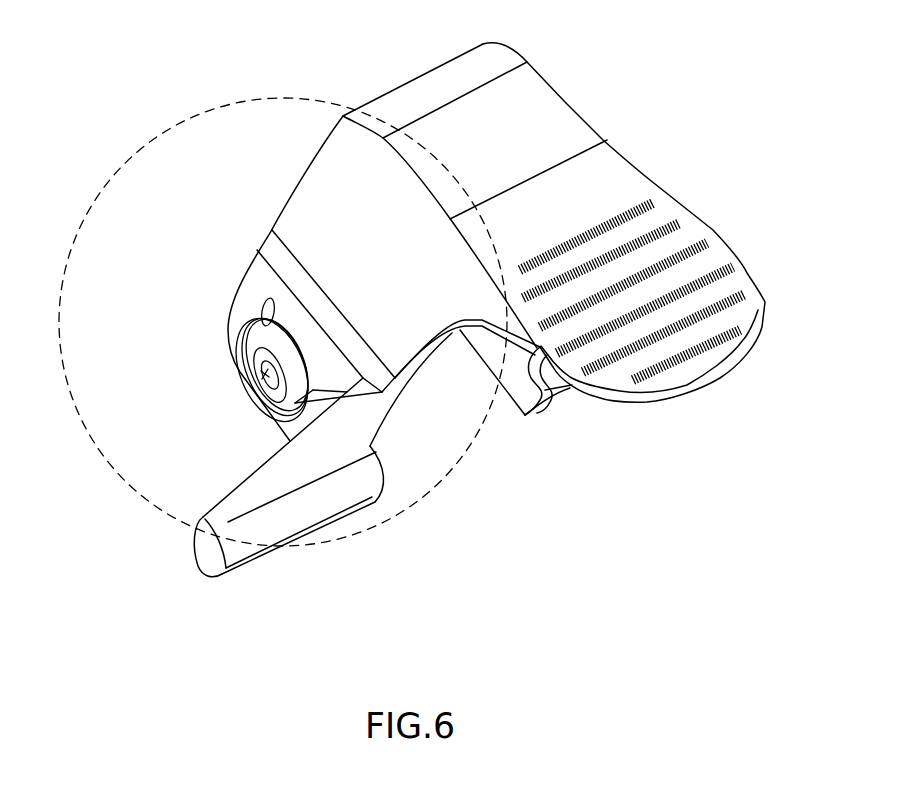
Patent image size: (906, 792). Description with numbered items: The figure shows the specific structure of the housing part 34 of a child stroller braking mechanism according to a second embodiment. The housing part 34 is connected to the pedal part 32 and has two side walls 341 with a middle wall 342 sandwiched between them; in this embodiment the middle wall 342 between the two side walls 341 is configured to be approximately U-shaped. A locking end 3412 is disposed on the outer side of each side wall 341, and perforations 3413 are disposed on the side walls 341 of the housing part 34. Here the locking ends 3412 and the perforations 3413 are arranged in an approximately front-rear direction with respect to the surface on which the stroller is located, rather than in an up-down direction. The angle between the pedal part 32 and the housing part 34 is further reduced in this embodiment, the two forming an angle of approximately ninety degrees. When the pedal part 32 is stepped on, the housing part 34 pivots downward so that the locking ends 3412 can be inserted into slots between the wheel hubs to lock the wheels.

The pedal part 32 is at (697, 370).
The housing part 34 is at (152, 500).
The side wall 341 is at (330, 173).
The middle wall 342 is at (452, 90).
The locking end 3412 is at (236, 541).
The perforation 3413 is at (250, 384).